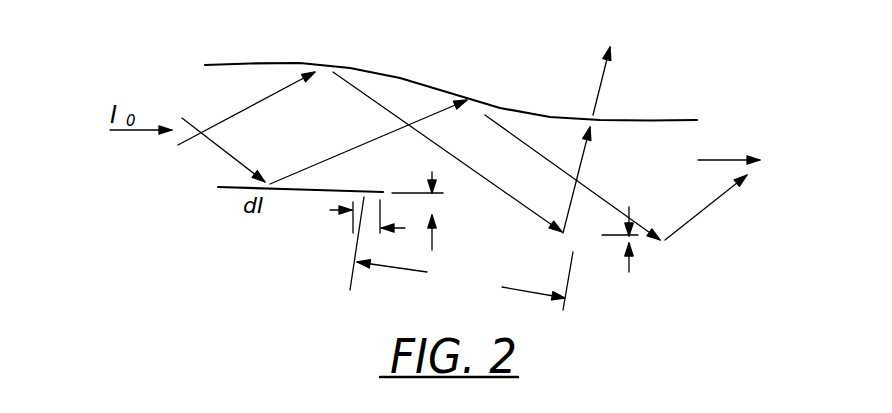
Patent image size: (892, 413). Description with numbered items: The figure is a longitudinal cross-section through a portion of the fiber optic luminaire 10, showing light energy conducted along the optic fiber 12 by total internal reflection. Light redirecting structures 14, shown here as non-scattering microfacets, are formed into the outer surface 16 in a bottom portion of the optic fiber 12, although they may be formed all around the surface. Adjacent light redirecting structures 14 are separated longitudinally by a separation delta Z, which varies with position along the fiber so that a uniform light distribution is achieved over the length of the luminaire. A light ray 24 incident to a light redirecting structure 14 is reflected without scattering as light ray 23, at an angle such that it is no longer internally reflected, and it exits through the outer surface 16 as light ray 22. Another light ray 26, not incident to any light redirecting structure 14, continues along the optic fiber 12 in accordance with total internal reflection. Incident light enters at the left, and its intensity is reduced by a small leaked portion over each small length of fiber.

The fiber optic luminaire 10 is at (710, 235).
The optic fiber 12 is at (680, 85).
The light redirecting structure 14 is at (353, 233).
The outer surface 16 is at (233, 190).
The light ray 22 is at (600, 78).
The light ray 23 is at (583, 160).
The light ray 24 is at (367, 92).
The light ray 26 is at (257, 103).